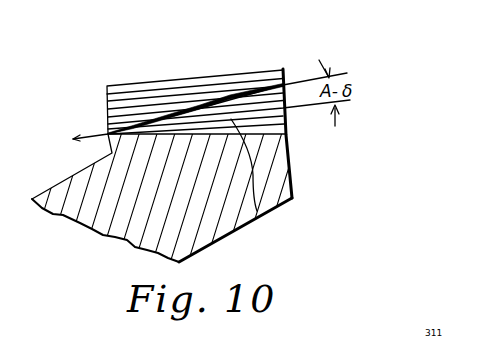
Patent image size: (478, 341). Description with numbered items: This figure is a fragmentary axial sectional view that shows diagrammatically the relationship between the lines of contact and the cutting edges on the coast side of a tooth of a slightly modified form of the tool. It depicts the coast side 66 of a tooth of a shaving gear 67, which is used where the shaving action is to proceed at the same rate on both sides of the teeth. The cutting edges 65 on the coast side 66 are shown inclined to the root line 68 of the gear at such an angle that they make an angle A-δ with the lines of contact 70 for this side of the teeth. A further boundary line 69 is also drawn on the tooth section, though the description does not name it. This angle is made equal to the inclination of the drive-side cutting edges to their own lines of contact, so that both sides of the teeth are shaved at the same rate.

The cutting edges 65 is at (278, 125).
The coast side 66 is at (137, 86).
The shaving gear 67 is at (87, 218).
The root line 68 is at (263, 133).
The curved boundary line 69 is at (257, 211).
The lines of contact 70 is at (237, 91).